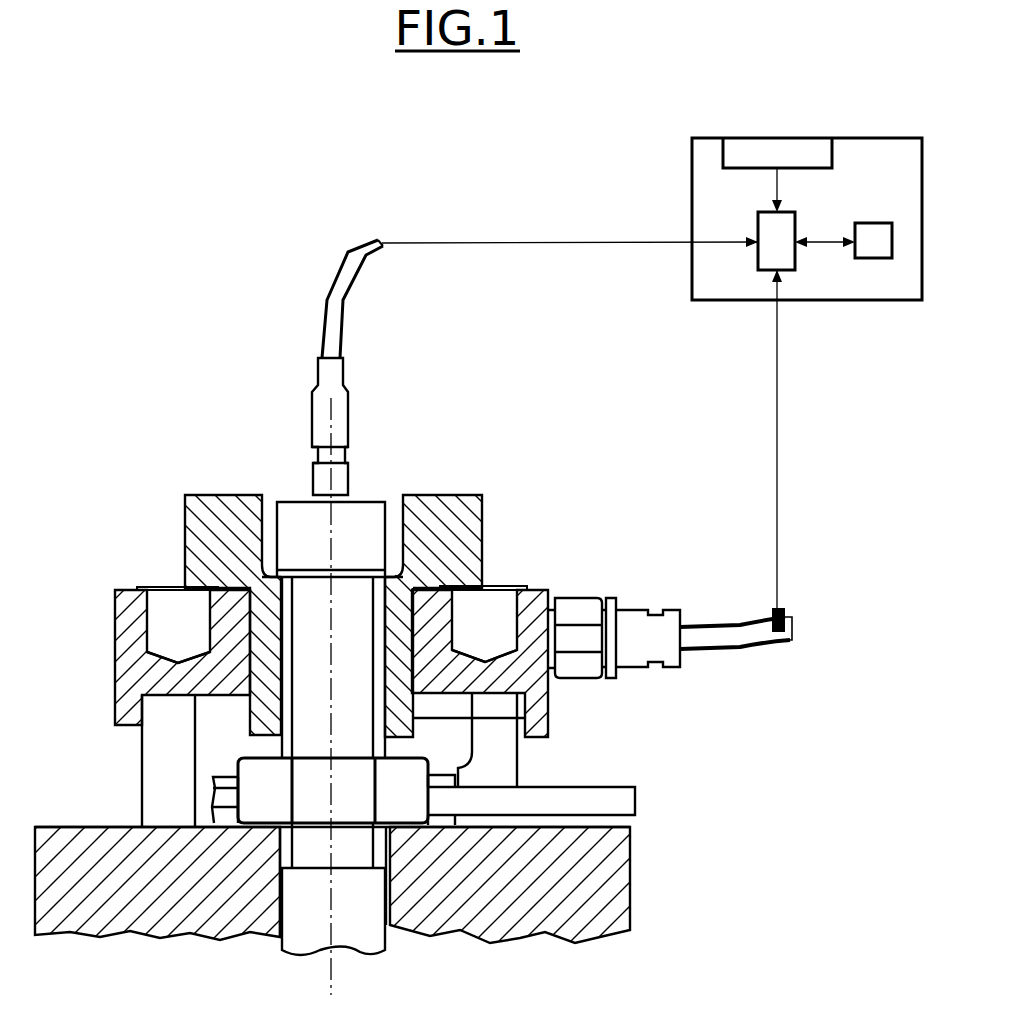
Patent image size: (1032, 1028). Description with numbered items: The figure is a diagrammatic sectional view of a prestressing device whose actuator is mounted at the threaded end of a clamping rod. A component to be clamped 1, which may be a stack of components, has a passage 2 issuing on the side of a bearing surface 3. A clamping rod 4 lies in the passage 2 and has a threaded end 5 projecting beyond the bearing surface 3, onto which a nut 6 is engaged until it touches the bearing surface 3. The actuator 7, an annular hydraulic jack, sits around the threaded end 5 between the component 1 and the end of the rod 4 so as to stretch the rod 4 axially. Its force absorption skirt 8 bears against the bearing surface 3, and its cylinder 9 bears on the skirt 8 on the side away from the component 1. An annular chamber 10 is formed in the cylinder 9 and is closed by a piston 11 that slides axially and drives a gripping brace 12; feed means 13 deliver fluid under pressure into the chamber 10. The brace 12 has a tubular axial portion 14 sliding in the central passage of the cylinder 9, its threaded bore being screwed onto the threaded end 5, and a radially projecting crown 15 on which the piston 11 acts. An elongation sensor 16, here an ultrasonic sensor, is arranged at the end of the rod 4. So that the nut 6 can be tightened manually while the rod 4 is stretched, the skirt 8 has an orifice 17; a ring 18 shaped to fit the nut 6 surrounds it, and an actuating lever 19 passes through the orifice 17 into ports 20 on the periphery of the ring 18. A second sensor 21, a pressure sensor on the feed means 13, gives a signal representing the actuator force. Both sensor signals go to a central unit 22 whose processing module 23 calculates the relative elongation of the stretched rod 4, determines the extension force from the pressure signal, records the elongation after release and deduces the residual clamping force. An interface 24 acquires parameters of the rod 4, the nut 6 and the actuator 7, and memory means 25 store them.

The component to be clamped 1 is at (607, 872).
The passage 2 is at (395, 915).
The bearing surface 3 is at (625, 824).
The clamping rod 4 is at (303, 929).
The threaded end 5 is at (302, 658).
The nut 6 is at (302, 802).
The actuator 7 is at (361, 608).
The force absorption skirt 8 is at (165, 792).
The cylinder 9 is at (130, 680).
The annular chamber 10 is at (178, 660).
The piston 11 is at (162, 613).
The gripping brace 12 is at (220, 540).
The feed means 13 is at (632, 627).
The tubular axial portion 14 is at (545, 718).
The crown 15 is at (467, 507).
The elongation sensor 16 is at (355, 533).
The orifice 17 is at (495, 770).
The ring 18 is at (220, 782).
The actuating lever 19 is at (602, 800).
The ports 20 is at (227, 798).
The second sensor 21 is at (787, 610).
The central unit 22 is at (876, 302).
The processing module 23 is at (780, 250).
The interface 24 is at (771, 155).
The memory means 25 is at (871, 240).